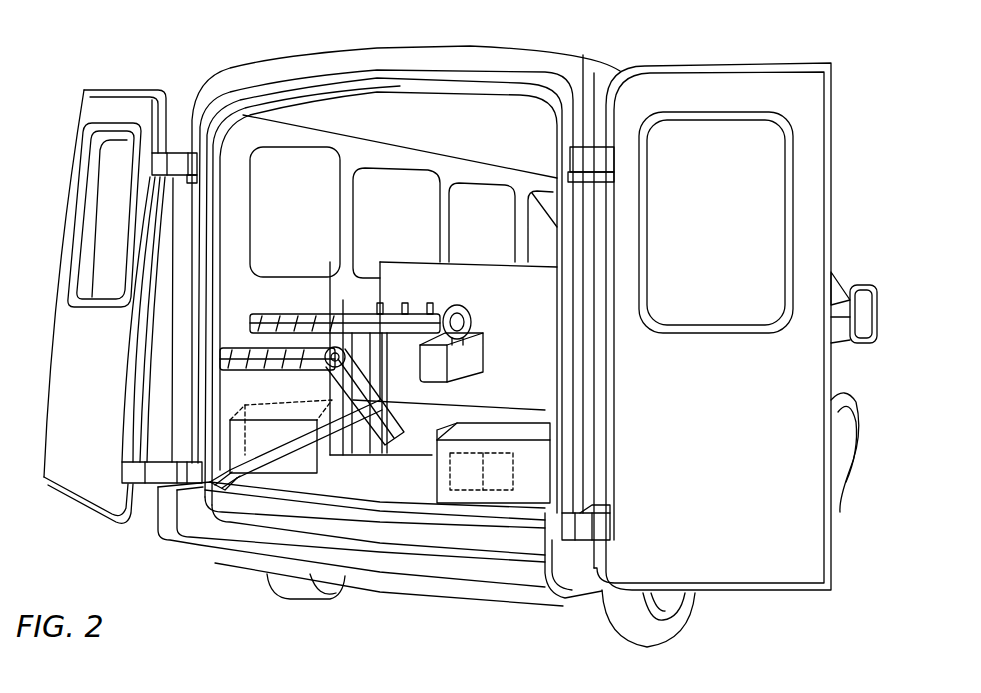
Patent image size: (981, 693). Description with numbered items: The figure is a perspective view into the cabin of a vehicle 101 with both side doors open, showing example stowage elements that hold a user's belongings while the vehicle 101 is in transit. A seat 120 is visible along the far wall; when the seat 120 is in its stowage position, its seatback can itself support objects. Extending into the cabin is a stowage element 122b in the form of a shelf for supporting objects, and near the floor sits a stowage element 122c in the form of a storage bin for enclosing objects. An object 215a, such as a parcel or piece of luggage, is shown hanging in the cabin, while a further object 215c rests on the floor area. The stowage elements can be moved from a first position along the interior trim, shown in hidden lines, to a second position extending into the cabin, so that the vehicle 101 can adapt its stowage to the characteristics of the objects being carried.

The vehicle 101 is at (876, 100).
The seat 120 is at (493, 258).
The stowage element 122b is at (352, 310).
The stowage element 122c is at (278, 407).
The object 215a is at (478, 348).
The cargo floor platform 215c is at (470, 497).